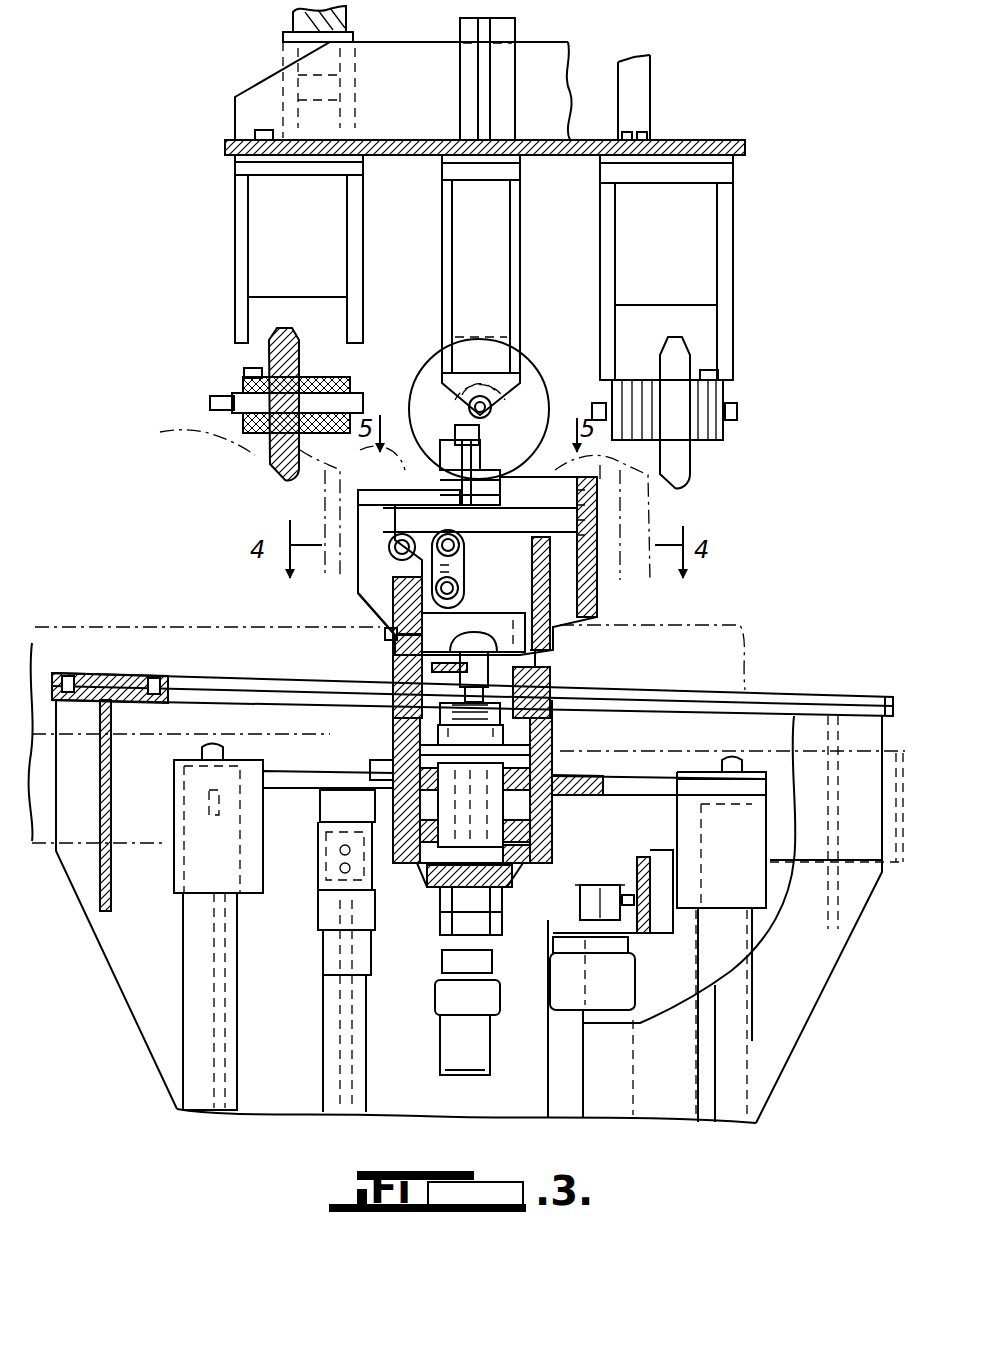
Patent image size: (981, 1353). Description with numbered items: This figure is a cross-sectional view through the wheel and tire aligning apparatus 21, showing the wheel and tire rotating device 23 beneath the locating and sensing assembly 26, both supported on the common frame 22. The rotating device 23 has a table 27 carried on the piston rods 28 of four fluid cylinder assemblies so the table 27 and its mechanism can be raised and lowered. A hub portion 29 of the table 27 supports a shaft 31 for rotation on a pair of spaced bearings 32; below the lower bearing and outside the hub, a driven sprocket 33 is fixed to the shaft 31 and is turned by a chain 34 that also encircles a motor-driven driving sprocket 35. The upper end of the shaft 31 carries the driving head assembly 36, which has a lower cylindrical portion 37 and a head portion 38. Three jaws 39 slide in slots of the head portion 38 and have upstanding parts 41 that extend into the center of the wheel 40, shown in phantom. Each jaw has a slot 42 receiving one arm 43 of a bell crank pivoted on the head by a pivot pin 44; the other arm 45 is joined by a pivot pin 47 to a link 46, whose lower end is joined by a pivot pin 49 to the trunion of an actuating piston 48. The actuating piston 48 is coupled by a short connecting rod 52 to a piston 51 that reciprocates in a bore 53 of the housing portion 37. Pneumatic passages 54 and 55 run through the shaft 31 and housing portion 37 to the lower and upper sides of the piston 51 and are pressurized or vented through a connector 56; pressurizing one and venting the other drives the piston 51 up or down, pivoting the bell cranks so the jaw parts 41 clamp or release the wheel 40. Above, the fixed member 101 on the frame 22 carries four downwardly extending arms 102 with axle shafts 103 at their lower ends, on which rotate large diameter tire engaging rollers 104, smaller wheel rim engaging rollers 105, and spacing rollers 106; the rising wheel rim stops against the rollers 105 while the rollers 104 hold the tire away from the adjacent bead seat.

The apparatus 21 is at (778, 530).
The frame 22 is at (100, 670).
The wheel and tire rotating device 23 is at (602, 533).
The locating and sensing assembly 26 is at (745, 365).
The table 27 is at (618, 775).
The piston rods 28 is at (183, 964).
The hub portion 29 is at (530, 812).
The shaft 31 is at (552, 797).
The bearings 32 is at (568, 760).
The driven sprocket 33 is at (530, 900).
The chain 34 is at (412, 918).
The driving sprocket 35 is at (563, 905).
The driving head assembly 36 is at (600, 625).
The lower cylindrical portion 37 is at (560, 685).
The head portion 38 is at (355, 517).
The jaws 39 is at (420, 470).
The wheel 40 is at (395, 550).
The upstanding parts 41 is at (470, 440).
The slots 42 is at (395, 492).
The bell crank arm 43 is at (500, 502).
The pivot pin 44 is at (392, 560).
The bell crank arm 45 is at (542, 516).
The link 46 is at (465, 570).
The pivot pin 47 is at (455, 545).
The actuating piston 48 is at (480, 620).
The pivot pin 49 is at (460, 590).
The piston 51 is at (468, 668).
The connecting rod 52 is at (390, 636).
The bore 53 is at (458, 690).
The pneumatic passage 54 is at (390, 765).
The pneumatic passage 55 is at (392, 736).
The connector 56 is at (440, 1048).
The fixed member 101 is at (748, 153).
The arms 102 is at (235, 183).
The axle shafts 103 is at (240, 400).
The tire engaging rollers 104 is at (288, 328).
The wheel rim engaging rollers 105 is at (312, 380).
The spacing rollers 106 is at (250, 374).